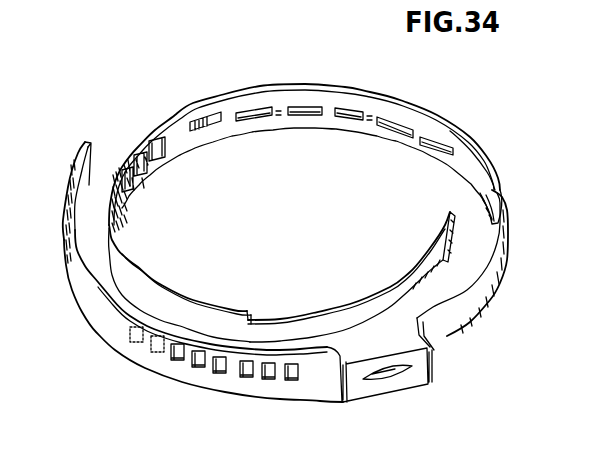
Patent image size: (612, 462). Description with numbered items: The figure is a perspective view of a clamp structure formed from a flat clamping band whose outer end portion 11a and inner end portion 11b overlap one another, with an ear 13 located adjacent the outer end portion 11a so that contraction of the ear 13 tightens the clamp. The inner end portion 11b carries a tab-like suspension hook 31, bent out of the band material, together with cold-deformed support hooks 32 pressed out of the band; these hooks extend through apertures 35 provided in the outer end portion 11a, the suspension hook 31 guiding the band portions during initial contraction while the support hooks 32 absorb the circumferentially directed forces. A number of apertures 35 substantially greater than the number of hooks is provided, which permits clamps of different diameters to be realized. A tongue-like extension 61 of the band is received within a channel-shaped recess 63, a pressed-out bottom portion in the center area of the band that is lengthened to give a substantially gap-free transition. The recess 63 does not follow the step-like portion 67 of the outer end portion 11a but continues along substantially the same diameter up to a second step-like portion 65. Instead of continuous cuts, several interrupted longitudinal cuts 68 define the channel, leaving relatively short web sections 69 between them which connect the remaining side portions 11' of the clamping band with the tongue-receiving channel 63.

The longitudinally extending band portions 11' is at (304, 210).
The outer end portion 11a is at (254, 392).
The inner end portion 11b is at (212, 310).
The ear 13 is at (424, 388).
The suspension hook 31 is at (152, 142).
The cold-deformed support hook 32 is at (130, 188).
The aperture 35 is at (218, 378).
The tongue-like extension 61 is at (388, 292).
The channel-shaped recess 63 is at (262, 122).
The second step-like portion 65 is at (197, 120).
The step-like portion 67 is at (488, 190).
The interrupted longitudinal cuts 68 is at (307, 119).
The web sections 69 is at (236, 128).